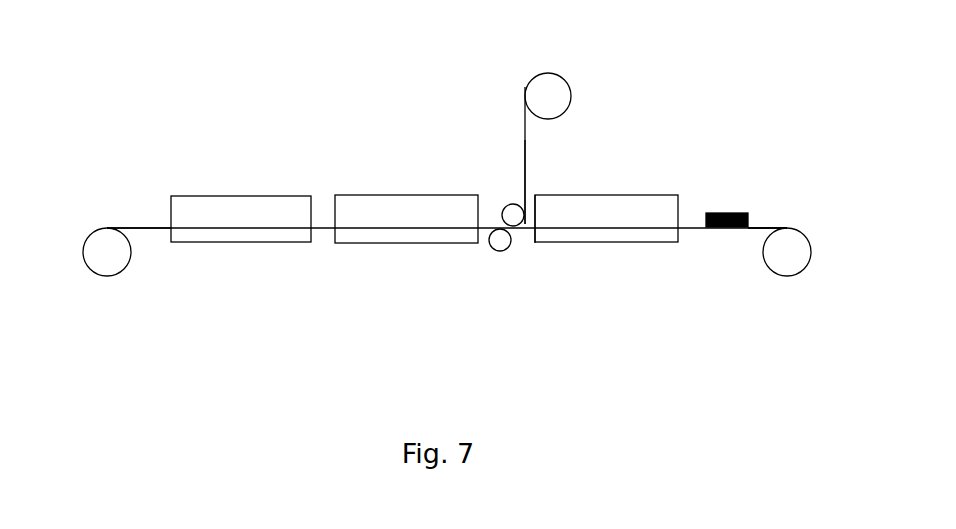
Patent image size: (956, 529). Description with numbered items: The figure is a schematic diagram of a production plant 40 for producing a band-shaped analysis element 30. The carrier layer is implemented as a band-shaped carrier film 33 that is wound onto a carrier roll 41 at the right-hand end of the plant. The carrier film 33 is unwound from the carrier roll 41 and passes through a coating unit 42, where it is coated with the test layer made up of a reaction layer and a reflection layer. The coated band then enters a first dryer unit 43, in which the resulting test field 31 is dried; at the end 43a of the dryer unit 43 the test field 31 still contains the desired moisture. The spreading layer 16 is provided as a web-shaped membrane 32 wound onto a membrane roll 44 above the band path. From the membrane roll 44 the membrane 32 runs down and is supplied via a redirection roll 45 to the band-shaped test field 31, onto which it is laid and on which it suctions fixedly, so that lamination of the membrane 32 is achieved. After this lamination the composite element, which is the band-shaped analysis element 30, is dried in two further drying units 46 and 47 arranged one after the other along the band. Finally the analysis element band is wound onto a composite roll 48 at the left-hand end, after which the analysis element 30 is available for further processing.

The spreading layer 16 is at (525, 162).
The analysis element 30 is at (142, 228).
The test field 31 is at (695, 228).
The membrane 32 is at (525, 137).
The carrier film 33 is at (765, 227).
The production plant 40 is at (186, 125).
The carrier roll 41 is at (775, 287).
The coating unit 42 is at (719, 199).
The first dryer unit 43 is at (595, 258).
The end of the dryer unit 43a is at (527, 257).
The membrane roll 44 is at (514, 75).
The redirection roll 45 is at (510, 213).
The drying unit 46 is at (416, 259).
The drying unit 47 is at (276, 256).
The composite roll 48 is at (107, 262).